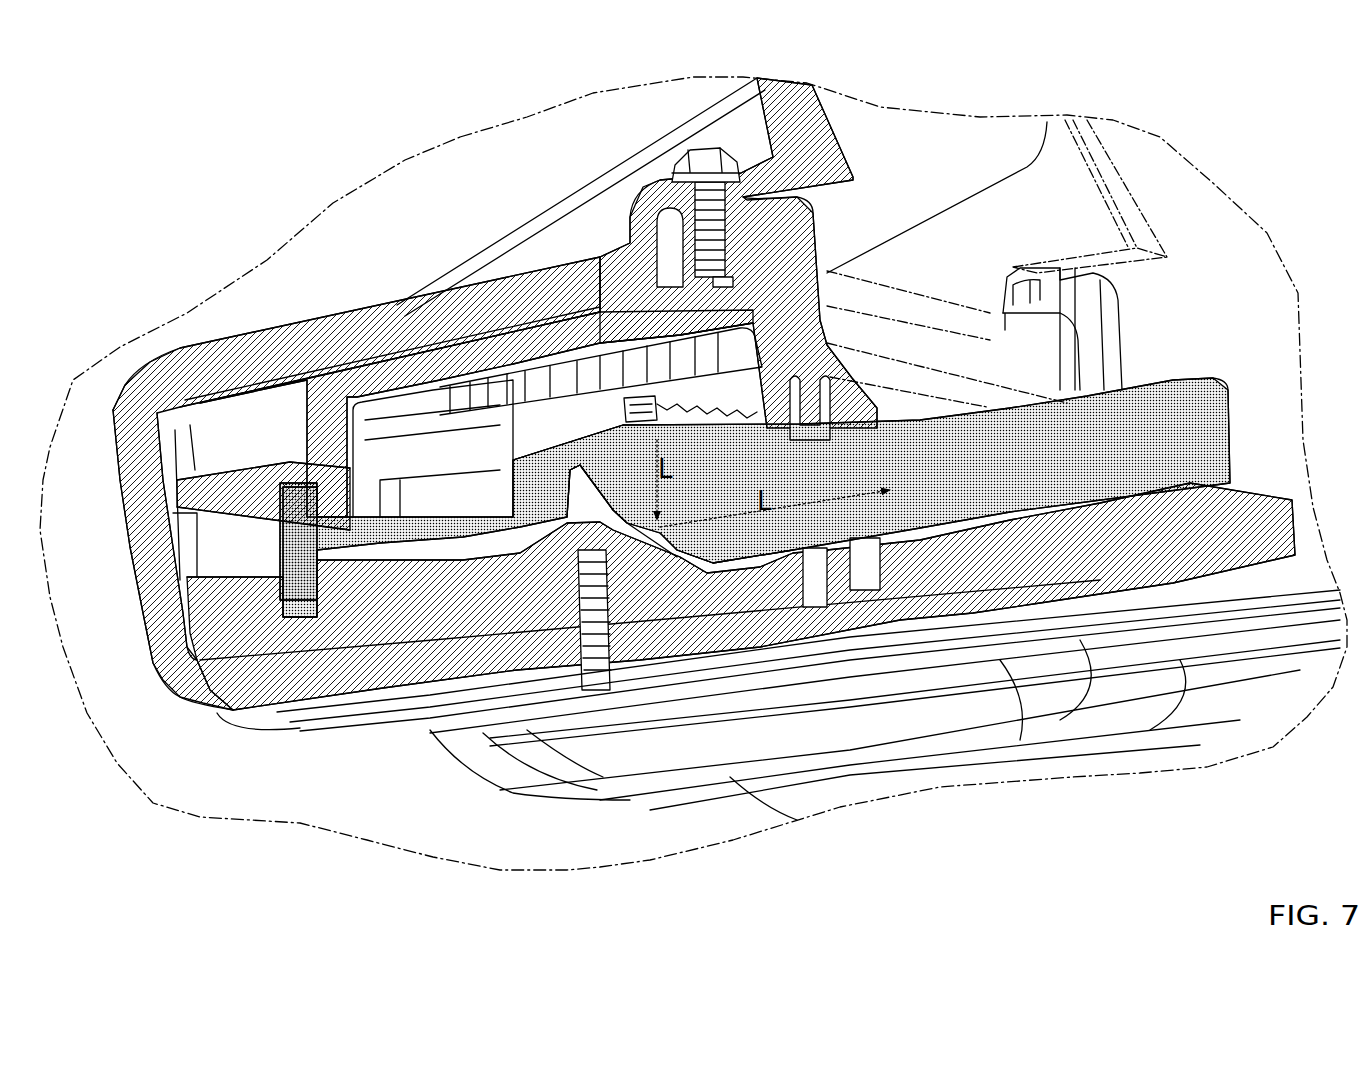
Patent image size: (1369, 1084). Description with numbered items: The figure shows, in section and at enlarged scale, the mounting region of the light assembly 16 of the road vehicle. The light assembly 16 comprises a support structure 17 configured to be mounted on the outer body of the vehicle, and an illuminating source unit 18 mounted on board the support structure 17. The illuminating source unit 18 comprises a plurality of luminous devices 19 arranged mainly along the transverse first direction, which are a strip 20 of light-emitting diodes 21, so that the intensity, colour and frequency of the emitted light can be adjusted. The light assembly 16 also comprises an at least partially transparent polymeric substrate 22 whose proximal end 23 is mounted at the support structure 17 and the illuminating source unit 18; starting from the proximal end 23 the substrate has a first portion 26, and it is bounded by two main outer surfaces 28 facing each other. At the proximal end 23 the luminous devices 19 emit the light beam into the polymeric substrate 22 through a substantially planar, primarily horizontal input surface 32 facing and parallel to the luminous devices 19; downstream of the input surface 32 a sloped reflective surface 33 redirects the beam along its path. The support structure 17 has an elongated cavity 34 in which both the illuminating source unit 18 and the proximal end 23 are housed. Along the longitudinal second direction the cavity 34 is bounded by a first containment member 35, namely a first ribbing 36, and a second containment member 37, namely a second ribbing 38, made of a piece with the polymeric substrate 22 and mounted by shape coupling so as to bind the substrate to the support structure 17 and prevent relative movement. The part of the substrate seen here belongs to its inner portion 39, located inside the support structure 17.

The light assembly 16 is at (460, 200).
The support structure 17 is at (358, 315).
The illuminating source unit 18 is at (603, 375).
The luminous devices 19 is at (699, 403).
The strip 20 is at (612, 418).
The light-emitting diodes 21 is at (668, 397).
The polymeric substrate 22 is at (1203, 390).
The proximal end 23 is at (458, 565).
The first portion 26 is at (1000, 400).
The main outer surfaces 28 is at (1112, 385).
The input surface 32 is at (613, 435).
The sloped reflective surface 33 is at (678, 556).
The cavity 34 is at (445, 383).
The first containment member 35 is at (285, 563).
The first ribbing 36 is at (285, 495).
The second containment member 37 is at (882, 398).
The second ribbing 38 is at (840, 420).
The inner portion 39 is at (753, 565).